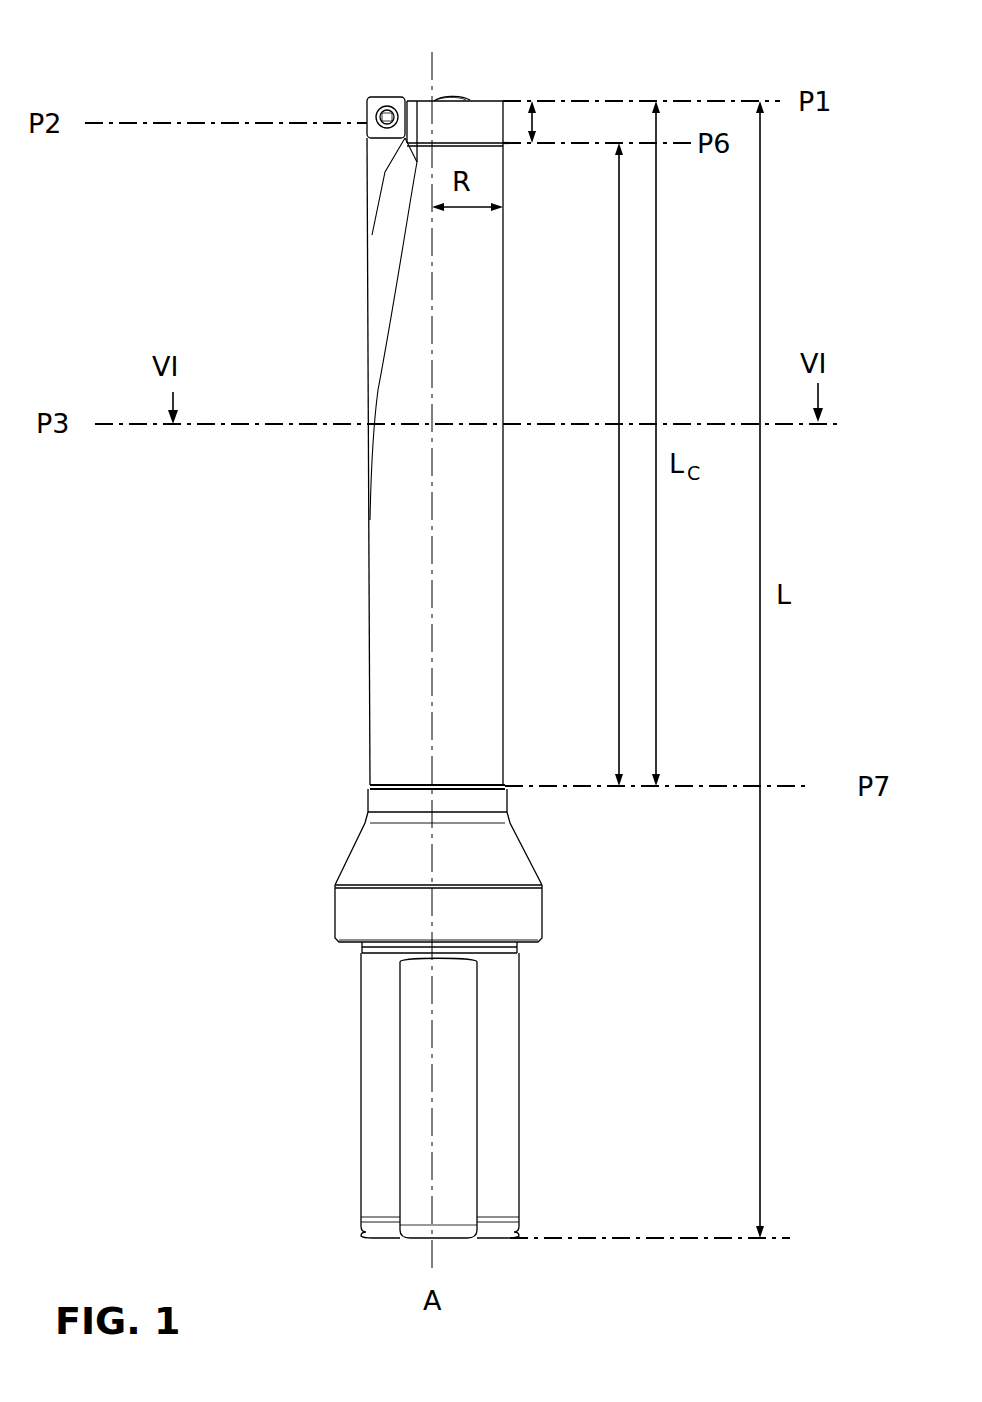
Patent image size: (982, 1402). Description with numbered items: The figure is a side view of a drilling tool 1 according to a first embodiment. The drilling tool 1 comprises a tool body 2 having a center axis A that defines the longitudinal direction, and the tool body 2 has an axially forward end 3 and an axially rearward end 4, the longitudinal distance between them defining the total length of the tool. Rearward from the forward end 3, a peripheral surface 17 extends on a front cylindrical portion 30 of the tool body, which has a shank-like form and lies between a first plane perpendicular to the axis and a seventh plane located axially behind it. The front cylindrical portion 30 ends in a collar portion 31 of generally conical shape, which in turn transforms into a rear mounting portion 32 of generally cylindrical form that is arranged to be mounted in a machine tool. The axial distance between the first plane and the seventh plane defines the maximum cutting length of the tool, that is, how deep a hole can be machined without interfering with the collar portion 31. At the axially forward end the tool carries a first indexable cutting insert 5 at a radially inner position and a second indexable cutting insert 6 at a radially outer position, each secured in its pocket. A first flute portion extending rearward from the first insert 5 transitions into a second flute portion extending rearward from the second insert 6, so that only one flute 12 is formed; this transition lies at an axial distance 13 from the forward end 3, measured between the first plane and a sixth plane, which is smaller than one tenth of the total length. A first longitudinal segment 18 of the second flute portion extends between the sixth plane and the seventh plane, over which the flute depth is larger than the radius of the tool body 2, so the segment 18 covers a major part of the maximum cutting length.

The drilling tool 1 is at (234, 83).
The tool body 2 is at (482, 620).
The axially forward end 3 is at (487, 101).
The axially rearward end 4 is at (377, 1242).
The first indexable cutting insert 5 is at (460, 96).
The second indexable cutting insert 6 is at (372, 98).
The flute 12 is at (385, 310).
The axial distance 13 is at (555, 122).
The peripheral surface 17 is at (483, 318).
The first longitudinal segment 18 is at (598, 464).
The front cylindrical portion 30 is at (385, 488).
The collar portion 31 is at (368, 843).
The rear mounting portion 32 is at (372, 1103).